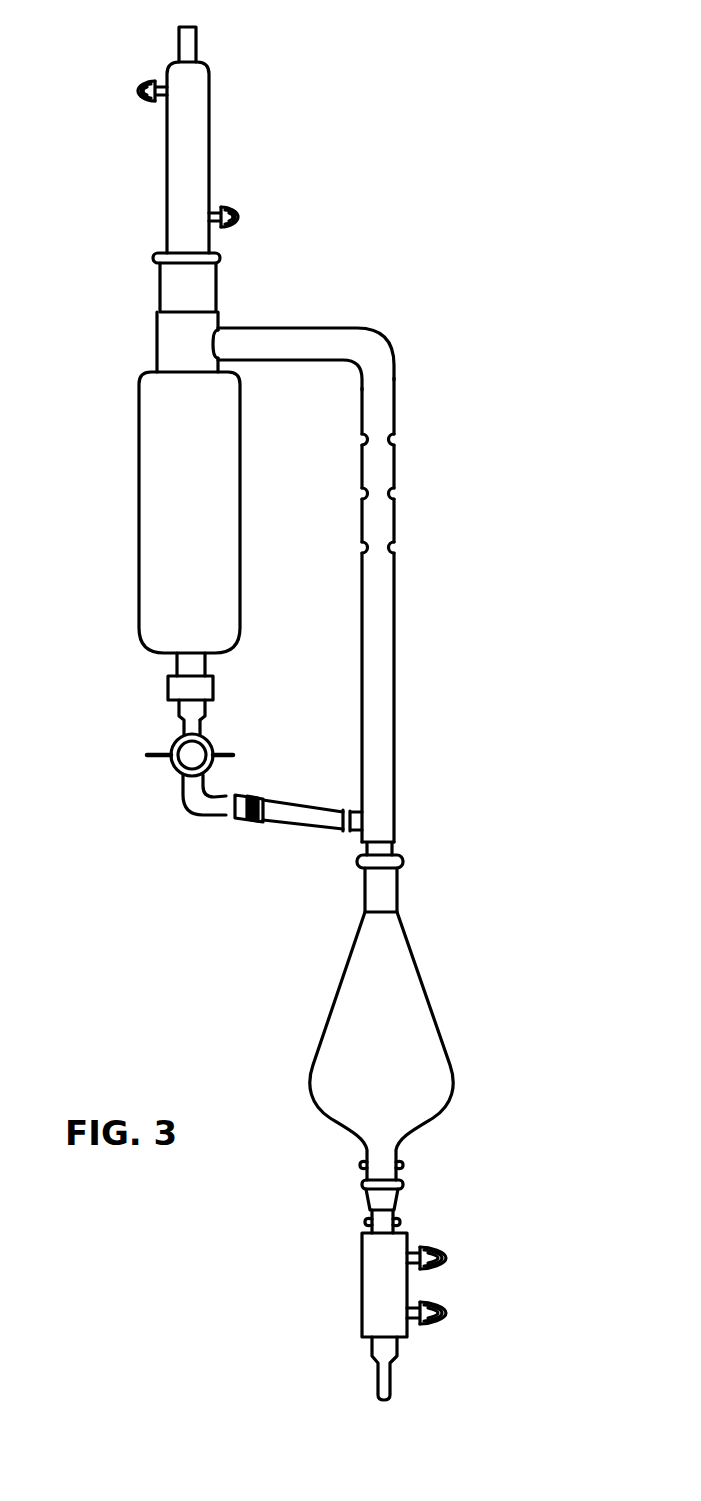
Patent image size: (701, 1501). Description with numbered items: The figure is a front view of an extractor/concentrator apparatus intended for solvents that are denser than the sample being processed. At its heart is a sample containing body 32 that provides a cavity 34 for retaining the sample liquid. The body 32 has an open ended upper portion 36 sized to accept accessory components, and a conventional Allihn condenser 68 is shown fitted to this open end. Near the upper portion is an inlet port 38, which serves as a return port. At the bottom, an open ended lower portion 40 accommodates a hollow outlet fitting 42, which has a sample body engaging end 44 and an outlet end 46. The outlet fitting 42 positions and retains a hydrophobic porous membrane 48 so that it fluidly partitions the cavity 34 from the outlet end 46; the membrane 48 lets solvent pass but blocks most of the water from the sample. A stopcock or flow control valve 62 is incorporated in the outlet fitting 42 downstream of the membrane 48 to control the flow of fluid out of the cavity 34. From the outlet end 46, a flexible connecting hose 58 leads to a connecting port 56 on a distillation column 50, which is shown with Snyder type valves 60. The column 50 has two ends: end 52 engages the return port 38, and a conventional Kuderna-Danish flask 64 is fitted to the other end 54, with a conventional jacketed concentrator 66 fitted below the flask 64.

The sample containing body 32 is at (140, 493).
The cavity 34 is at (160, 430).
The open ended upper portion 36 is at (155, 256).
The inlet port 38 is at (218, 326).
The open ended lower portion 40 is at (178, 672).
The hollow outlet fitting 42 is at (178, 716).
The sample body engaging end 44 is at (212, 703).
The outlet end 46 is at (239, 823).
The hydrophobic porous membrane 48 is at (170, 692).
The distillation column 50 is at (397, 700).
The end of distillation column 52 is at (312, 327).
The end of distillation column 54 is at (396, 848).
The connecting port 56 is at (358, 810).
The flexible connecting hose 58 is at (308, 831).
The Snyder type valves 60 is at (394, 460).
The flow control valve 62 is at (174, 768).
The Kuderna-Danish flask 64 is at (338, 982).
The jacketed concentrator 66 is at (362, 1285).
The Allihn condenser 68 is at (209, 131).